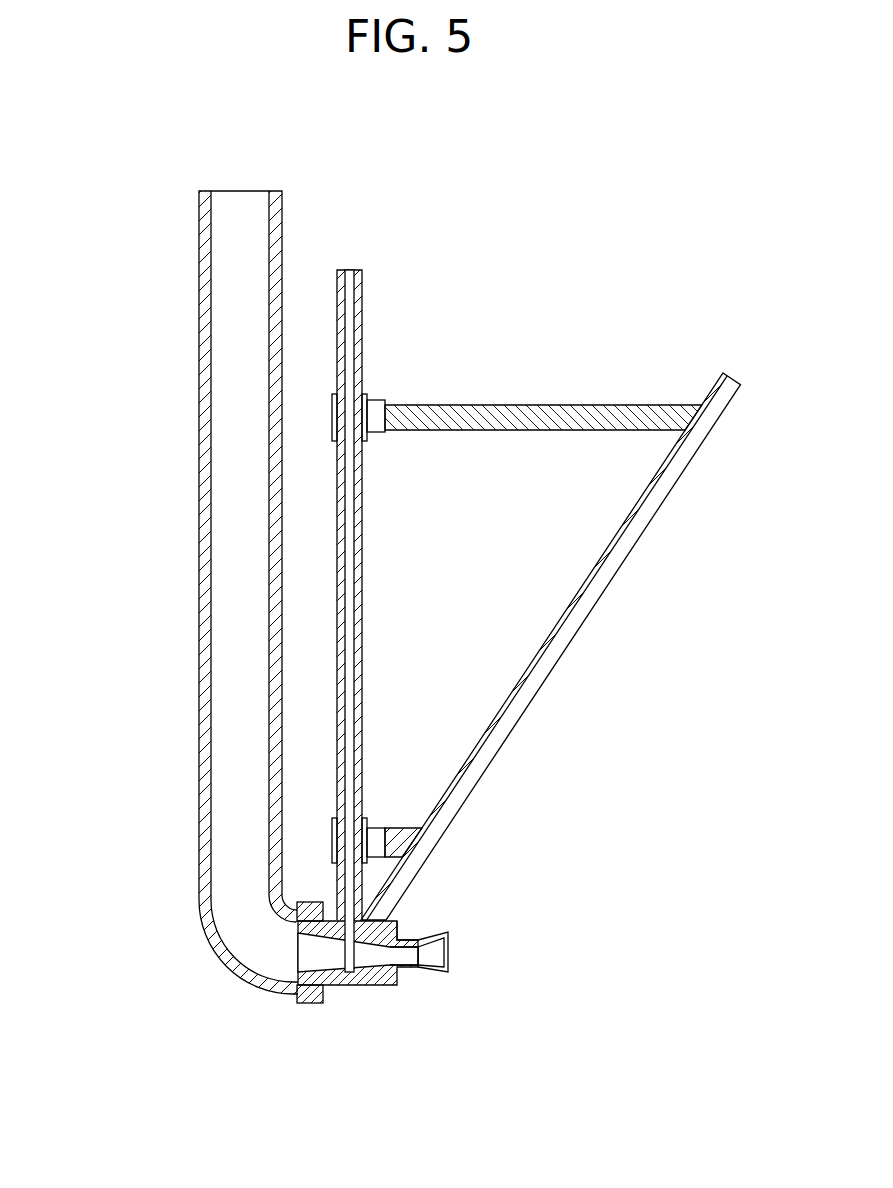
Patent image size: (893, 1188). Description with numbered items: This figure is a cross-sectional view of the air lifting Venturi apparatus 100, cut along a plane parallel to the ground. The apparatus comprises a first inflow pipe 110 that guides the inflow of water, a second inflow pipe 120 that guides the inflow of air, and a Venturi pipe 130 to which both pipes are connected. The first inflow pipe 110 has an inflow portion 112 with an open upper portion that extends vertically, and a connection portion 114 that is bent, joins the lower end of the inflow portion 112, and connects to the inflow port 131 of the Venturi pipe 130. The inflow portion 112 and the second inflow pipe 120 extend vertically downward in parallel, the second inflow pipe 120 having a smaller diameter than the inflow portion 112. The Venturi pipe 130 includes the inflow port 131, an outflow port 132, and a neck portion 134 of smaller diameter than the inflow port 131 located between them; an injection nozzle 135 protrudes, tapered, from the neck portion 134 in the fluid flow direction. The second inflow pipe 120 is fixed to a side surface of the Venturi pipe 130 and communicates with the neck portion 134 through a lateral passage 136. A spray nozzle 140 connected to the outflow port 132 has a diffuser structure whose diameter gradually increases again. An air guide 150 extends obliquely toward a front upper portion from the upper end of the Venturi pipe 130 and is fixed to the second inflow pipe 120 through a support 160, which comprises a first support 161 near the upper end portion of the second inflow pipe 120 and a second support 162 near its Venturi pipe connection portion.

The air lifting Venturi apparatus 100 is at (525, 268).
The first inflow pipe 110 is at (98, 857).
The inflow portion 112 is at (198, 842).
The connection portion 114 is at (243, 985).
The second inflow pipe 120 is at (363, 288).
The Venturi pipe 130 is at (400, 1042).
The inflow port 131 is at (290, 1000).
The outflow port 132 is at (400, 955).
The neck portion 134 is at (360, 955).
The injection nozzle 135 is at (350, 938).
The lateral passage 136 is at (402, 922).
The spray nozzle 140 is at (430, 960).
The air guide 150 is at (680, 460).
The support 160 is at (452, 603).
The first support 161 is at (437, 425).
The second support 162 is at (395, 830).